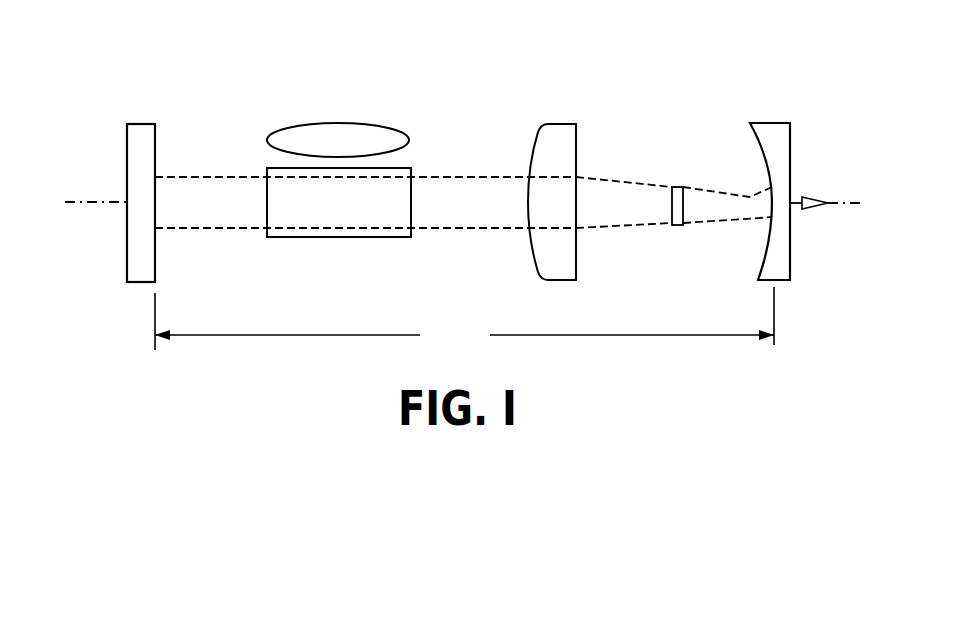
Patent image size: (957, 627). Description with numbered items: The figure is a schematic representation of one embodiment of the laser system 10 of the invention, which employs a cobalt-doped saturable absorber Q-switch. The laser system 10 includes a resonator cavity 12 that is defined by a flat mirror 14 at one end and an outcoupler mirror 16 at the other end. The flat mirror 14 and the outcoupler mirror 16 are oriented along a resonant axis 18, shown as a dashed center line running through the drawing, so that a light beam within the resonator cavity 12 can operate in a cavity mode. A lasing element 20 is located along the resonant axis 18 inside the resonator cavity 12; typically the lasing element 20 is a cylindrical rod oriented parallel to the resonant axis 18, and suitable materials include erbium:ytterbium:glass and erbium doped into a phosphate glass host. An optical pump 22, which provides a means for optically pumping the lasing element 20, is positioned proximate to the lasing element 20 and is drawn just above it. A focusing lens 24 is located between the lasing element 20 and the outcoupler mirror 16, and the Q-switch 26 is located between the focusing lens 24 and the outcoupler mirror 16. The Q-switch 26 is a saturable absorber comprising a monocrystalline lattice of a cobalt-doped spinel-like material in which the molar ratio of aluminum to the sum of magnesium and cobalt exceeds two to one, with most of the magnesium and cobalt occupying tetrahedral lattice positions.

The laser system 10 is at (262, 60).
The resonator cavity 12 is at (464, 318).
The flat mirror 14 is at (133, 282).
The outcoupler mirror 16 is at (792, 256).
The resonant axis 18 is at (88, 202).
The lasing element 20 is at (314, 237).
The optical pump 22 is at (350, 123).
The focusing lens 24 is at (557, 122).
The Q-switch 26 is at (680, 184).